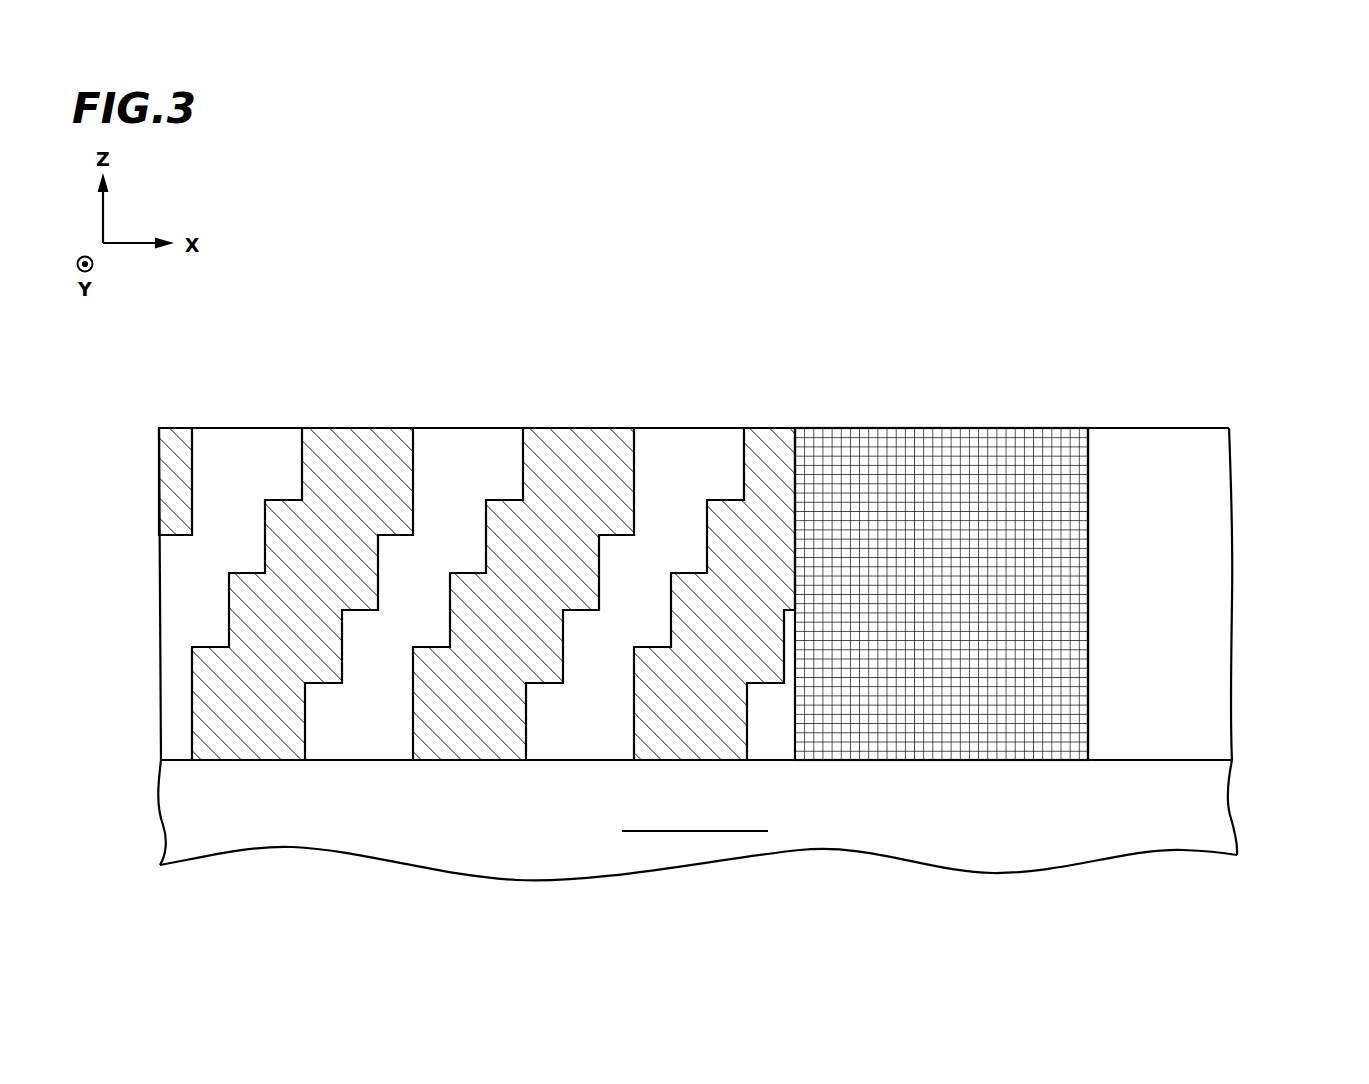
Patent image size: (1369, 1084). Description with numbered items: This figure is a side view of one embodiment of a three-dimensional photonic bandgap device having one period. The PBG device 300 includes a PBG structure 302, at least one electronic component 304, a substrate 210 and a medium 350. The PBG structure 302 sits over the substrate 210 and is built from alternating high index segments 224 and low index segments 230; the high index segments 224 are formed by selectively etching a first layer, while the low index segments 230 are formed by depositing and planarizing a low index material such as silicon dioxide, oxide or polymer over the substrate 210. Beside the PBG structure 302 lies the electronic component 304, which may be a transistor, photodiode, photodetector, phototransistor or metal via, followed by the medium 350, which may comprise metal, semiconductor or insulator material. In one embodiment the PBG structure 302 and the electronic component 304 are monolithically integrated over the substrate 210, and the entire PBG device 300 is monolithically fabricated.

The 3D PBG device 300 is at (1239, 225).
The 3D PBG structure 302 is at (158, 317).
The electronic component 304 is at (1088, 363).
The medium 350 is at (1140, 618).
The low index segments 230 is at (180, 442).
The high index segments 224 is at (196, 560).
The substrate 210 is at (177, 823).